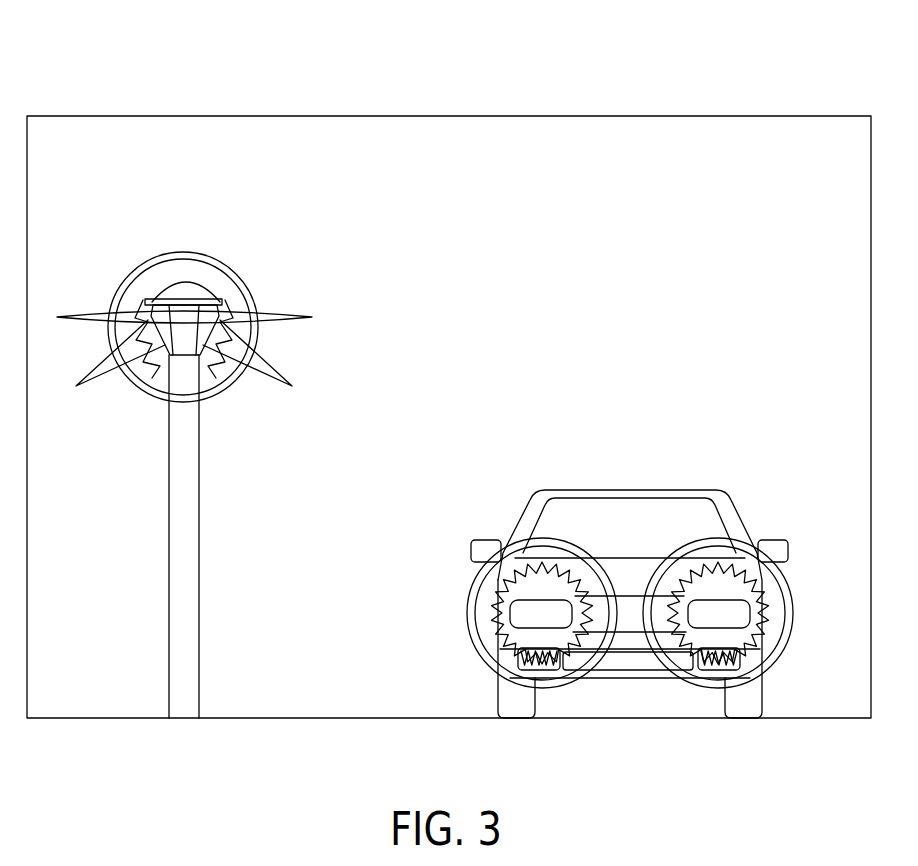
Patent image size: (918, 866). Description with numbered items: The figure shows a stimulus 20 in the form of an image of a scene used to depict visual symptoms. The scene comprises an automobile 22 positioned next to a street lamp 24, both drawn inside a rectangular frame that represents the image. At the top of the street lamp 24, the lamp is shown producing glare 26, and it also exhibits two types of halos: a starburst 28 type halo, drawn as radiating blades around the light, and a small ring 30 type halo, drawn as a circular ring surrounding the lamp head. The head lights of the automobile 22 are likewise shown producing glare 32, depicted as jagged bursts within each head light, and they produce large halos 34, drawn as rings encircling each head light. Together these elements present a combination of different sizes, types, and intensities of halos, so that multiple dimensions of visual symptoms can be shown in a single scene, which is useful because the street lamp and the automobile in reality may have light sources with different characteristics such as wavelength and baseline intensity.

The stimulus 20 is at (793, 92).
The automobile 22 is at (600, 490).
The street lamp 24 is at (201, 482).
The glare 26 is at (229, 308).
The starburst type halo 28 is at (92, 313).
The small ring type halo 30 is at (216, 258).
The glare 32 is at (491, 612).
The large halos 34 is at (471, 640).